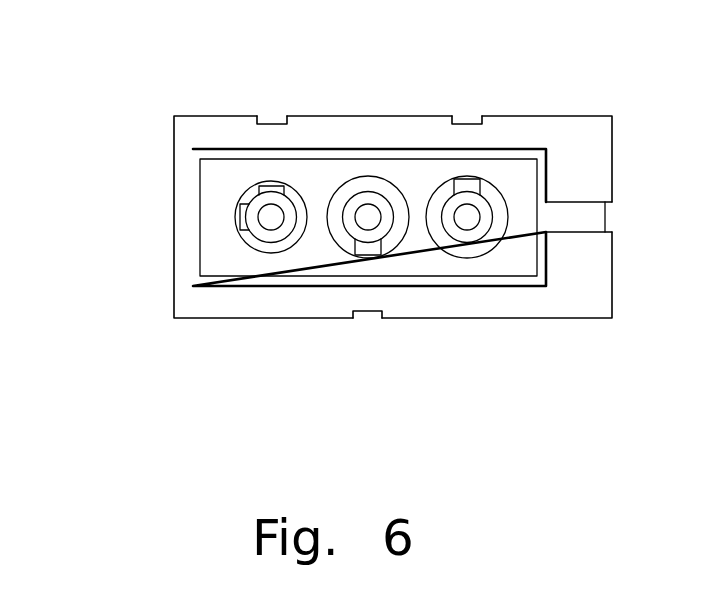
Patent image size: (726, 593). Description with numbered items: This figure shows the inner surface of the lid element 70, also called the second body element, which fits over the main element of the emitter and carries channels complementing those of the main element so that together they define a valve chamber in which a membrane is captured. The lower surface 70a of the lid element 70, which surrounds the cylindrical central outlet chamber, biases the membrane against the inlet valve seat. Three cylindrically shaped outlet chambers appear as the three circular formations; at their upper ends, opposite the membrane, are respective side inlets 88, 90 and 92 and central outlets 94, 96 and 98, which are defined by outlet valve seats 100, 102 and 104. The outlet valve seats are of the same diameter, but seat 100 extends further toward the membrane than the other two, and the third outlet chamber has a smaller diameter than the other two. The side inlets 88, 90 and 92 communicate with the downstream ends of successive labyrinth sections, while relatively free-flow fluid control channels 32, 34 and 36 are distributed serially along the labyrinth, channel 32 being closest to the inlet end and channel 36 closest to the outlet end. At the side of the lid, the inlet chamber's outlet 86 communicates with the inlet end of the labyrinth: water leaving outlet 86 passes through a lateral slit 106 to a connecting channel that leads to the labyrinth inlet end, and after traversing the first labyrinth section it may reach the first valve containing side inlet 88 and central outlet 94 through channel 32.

The lid element 70 is at (152, 207).
The lower surface 70a is at (223, 268).
The fluid control channel 32 is at (467, 108).
The fluid control channel 34 is at (373, 318).
The fluid control channel 36 is at (270, 110).
The outlet 86 is at (584, 224).
The lateral slit 106 is at (608, 216).
The side inlet 88 is at (467, 183).
The side inlet 90 is at (368, 251).
The side inlet 92 is at (272, 188).
The central outlet 94 is at (468, 220).
The central outlet 96 is at (368, 217).
The central outlet 98 is at (270, 216).
The outlet valve seat 100 is at (487, 218).
The outlet valve seat 102 is at (387, 225).
The outlet valve seat 104 is at (255, 230).